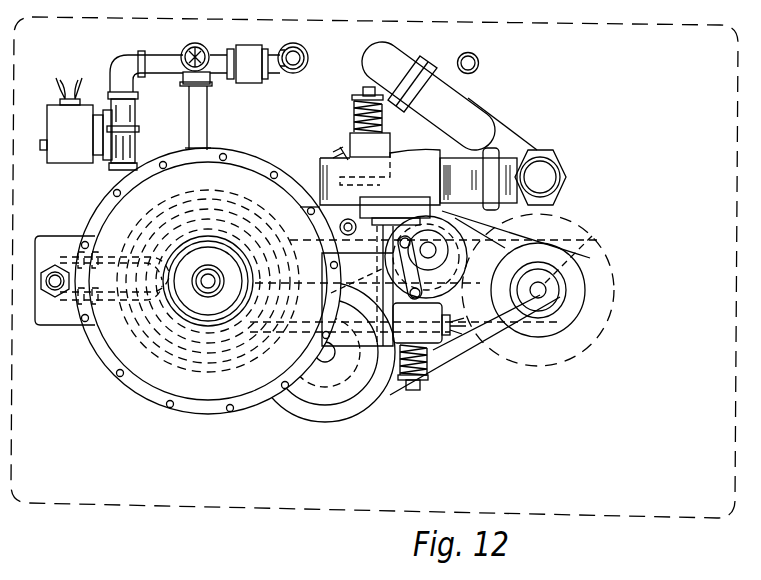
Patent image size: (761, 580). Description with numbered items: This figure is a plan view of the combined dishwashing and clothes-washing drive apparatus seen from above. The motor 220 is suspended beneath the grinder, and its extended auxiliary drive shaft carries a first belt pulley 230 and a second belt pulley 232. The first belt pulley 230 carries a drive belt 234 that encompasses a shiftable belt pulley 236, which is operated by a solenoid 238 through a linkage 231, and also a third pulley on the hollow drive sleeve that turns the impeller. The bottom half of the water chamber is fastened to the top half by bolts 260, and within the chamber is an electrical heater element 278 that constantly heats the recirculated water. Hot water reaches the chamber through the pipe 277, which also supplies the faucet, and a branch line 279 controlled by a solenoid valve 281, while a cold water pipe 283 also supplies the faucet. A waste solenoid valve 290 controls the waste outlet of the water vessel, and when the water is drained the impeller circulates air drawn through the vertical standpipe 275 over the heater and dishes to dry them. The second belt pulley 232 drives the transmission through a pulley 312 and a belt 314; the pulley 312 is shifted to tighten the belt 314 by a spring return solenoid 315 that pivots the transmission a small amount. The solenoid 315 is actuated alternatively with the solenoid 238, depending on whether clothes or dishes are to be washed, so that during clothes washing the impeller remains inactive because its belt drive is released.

The motor 220 is at (606, 320).
The belt pulley 230 is at (586, 290).
The linkage 231 is at (413, 268).
The second belt pulley 232 is at (578, 254).
The drive belt 234 is at (555, 238).
The shiftable belt pulley 236 is at (467, 243).
The solenoid 238 is at (430, 357).
The bolts 260 is at (200, 400).
The vertical standpipe 275 is at (193, 45).
The pipe 277 is at (297, 45).
The electrical heater element 278 is at (130, 372).
The branch line 279 is at (220, 54).
The solenoid valve 281 is at (125, 137).
The cold water pipe 283 is at (480, 63).
The waste solenoid valve 290 is at (422, 157).
The pulley 312 is at (352, 416).
The belt 314 is at (462, 352).
The spring return solenoid 315 is at (347, 150).